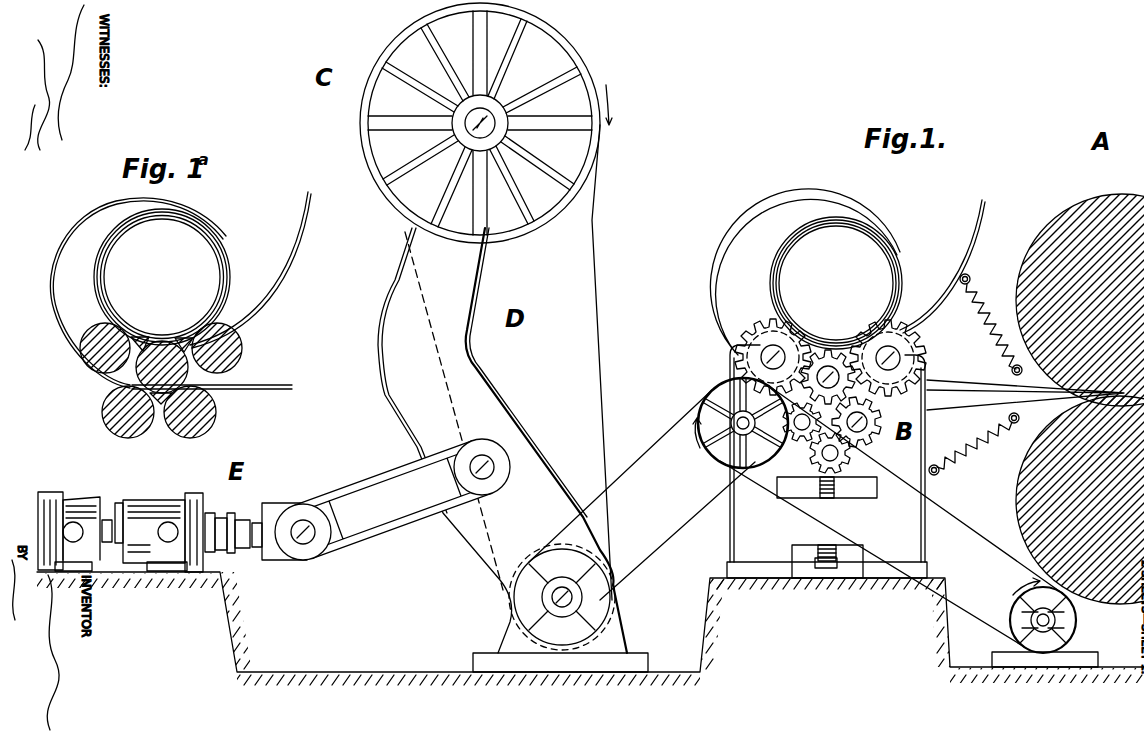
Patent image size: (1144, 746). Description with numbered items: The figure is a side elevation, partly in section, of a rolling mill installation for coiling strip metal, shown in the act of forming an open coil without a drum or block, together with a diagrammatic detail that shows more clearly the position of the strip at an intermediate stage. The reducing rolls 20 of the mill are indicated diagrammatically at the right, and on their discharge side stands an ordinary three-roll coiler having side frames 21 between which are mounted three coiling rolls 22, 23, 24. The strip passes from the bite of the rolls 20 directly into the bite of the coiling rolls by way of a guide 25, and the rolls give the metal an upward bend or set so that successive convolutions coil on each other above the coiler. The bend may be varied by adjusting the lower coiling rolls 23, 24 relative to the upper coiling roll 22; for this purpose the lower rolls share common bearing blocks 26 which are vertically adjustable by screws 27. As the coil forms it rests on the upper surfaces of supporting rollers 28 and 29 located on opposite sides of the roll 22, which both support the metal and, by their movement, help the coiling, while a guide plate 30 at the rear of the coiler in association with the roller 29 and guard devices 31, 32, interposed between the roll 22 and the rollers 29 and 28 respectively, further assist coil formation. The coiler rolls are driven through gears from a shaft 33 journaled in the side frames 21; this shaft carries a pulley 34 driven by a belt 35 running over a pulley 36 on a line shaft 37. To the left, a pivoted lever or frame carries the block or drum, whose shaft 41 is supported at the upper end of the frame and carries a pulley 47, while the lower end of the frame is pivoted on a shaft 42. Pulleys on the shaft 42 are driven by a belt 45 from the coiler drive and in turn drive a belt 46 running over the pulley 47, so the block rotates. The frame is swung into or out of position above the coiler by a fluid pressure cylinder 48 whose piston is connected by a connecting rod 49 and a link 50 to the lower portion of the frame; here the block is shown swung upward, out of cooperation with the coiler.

In FIG. 1, the rolls 20 is at (1057, 235).
In FIG. 1, the side frames 21 is at (827, 461).
In FIG. 1A, the coiling roll 22 is at (178, 373).
In FIG. 1A, the coiling roll 23 is at (112, 424).
In FIG. 1A, the coiling roll 24 is at (206, 420).
In FIG. 1, the guide 25 is at (944, 380).
In FIG. 1, the bearing blocks 26 is at (860, 490).
In FIG. 1, the screws 27 is at (830, 566).
In FIG. 1A, the supporting roller 28 is at (95, 362).
In FIG. 1A, the supporting roller 29 is at (232, 358).
In FIG. 1A, the guide plate 30 is at (283, 272).
In FIG. 1, the guide plate 30 is at (983, 238).
In FIG. 1A, the guard device 31 is at (184, 338).
In FIG. 1A, the guard device 32 is at (141, 338).
In FIG. 1, the shaft 33 is at (735, 421).
In FIG. 1, the pulley 34 is at (700, 383).
In FIG. 1, the belt 35 is at (975, 525).
In FIG. 1, the pulley 36 is at (1078, 610).
In FIG. 1, the line shaft 37 is at (1052, 626).
In FIG. 1, the shaft 41 is at (489, 122).
In FIG. 1, the shaft 42 is at (552, 595).
In FIG. 1, the belt 45 is at (690, 555).
In FIG. 1, the belt 46 is at (602, 322).
In FIG. 1, the pulley 47 is at (545, 60).
In FIG. 1, the cylinder 48 is at (165, 476).
In FIG. 1, the connecting rod 49 is at (240, 552).
In FIG. 1, the link 50 is at (395, 522).